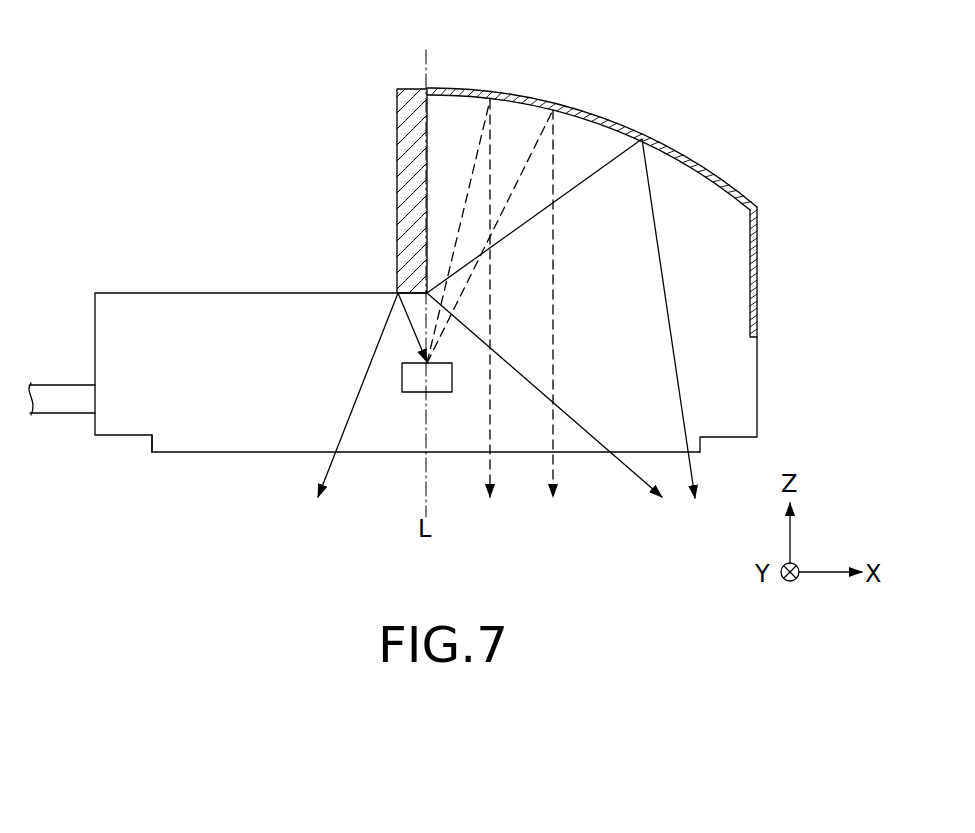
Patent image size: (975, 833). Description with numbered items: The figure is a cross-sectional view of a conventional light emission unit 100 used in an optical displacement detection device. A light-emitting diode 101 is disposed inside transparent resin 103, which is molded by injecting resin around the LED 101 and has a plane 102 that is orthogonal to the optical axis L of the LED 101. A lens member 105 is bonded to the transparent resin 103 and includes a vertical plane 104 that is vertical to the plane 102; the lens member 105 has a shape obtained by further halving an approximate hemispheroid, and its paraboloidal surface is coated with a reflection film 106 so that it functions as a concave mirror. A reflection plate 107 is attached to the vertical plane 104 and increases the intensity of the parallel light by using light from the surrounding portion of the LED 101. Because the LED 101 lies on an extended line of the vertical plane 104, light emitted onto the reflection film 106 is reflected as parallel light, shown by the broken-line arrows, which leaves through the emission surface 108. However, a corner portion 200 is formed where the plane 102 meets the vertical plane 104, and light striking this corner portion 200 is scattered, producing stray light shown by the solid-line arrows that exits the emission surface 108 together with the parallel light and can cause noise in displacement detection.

The light emission unit 100 is at (668, 132).
The light-emitting diode 101 is at (417, 383).
The plane 102 is at (270, 293).
The transparent resin 103 is at (195, 423).
The vertical plane 104 is at (423, 157).
The lens member 105 is at (595, 116).
The reflection film 106 is at (518, 95).
The reflection plate 107 is at (412, 105).
The emission surface 108 is at (520, 455).
The corner portion 200 is at (420, 287).